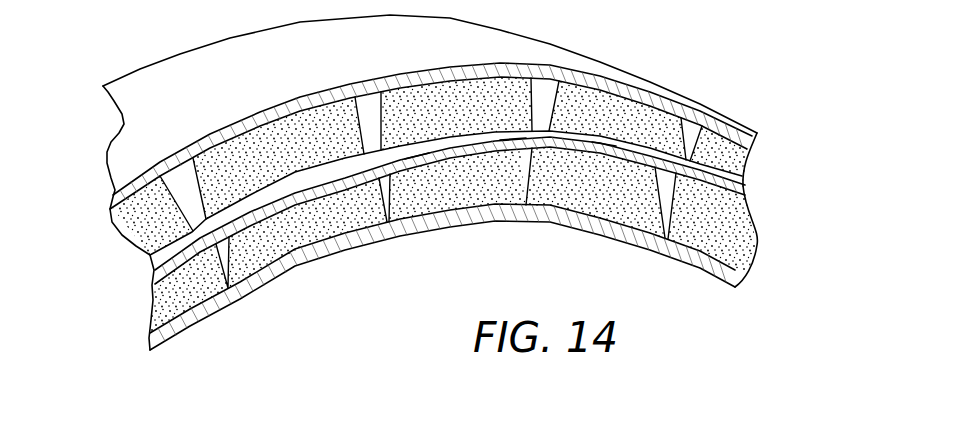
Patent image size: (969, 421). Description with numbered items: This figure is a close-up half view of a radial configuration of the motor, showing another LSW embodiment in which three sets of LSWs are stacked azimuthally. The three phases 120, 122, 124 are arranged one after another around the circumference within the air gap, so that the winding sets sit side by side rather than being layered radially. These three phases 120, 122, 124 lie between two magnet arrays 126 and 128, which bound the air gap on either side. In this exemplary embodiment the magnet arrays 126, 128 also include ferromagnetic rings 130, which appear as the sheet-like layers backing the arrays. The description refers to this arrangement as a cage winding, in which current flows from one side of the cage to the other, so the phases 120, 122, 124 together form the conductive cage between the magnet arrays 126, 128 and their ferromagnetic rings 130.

The first phase 120 is at (417, 152).
The second phase 122 is at (514, 150).
The third phase 124 is at (604, 151).
The magnet array 126 is at (750, 162).
The magnet array 128 is at (766, 243).
The ferromagnetic ring 130 is at (125, 138).